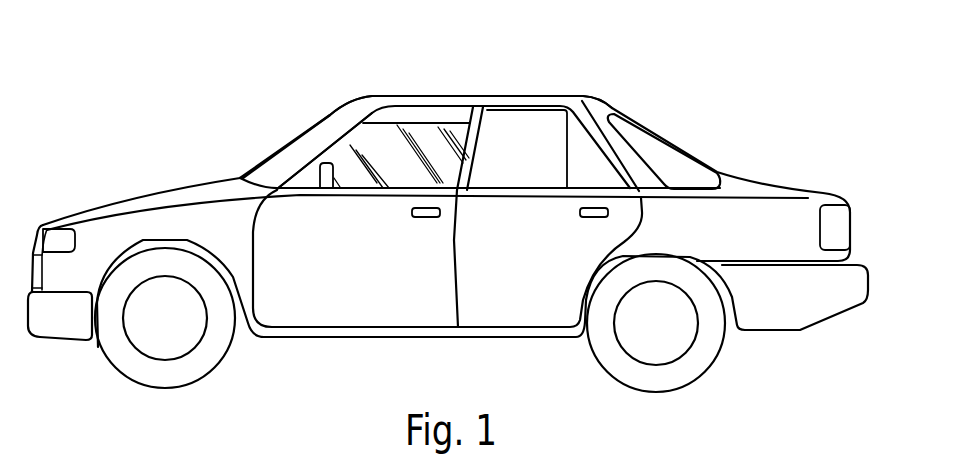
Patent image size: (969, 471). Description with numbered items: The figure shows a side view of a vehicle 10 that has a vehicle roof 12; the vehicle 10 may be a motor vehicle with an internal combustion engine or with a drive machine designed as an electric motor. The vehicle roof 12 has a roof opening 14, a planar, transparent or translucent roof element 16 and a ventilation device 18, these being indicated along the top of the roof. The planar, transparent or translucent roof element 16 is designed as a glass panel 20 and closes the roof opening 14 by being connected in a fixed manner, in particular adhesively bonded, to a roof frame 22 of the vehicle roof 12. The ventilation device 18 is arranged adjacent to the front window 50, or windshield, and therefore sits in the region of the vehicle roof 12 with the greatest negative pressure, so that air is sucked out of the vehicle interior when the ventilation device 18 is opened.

The vehicle 10 is at (733, 126).
The vehicle roof 12 is at (587, 85).
The roof opening 14 is at (541, 88).
The planar, transparent or translucent roof element 16 is at (507, 88).
The ventilation device 18 is at (410, 86).
The glass panel 20 is at (480, 88).
The roof frame 22 is at (603, 110).
The front window 50 is at (317, 133).